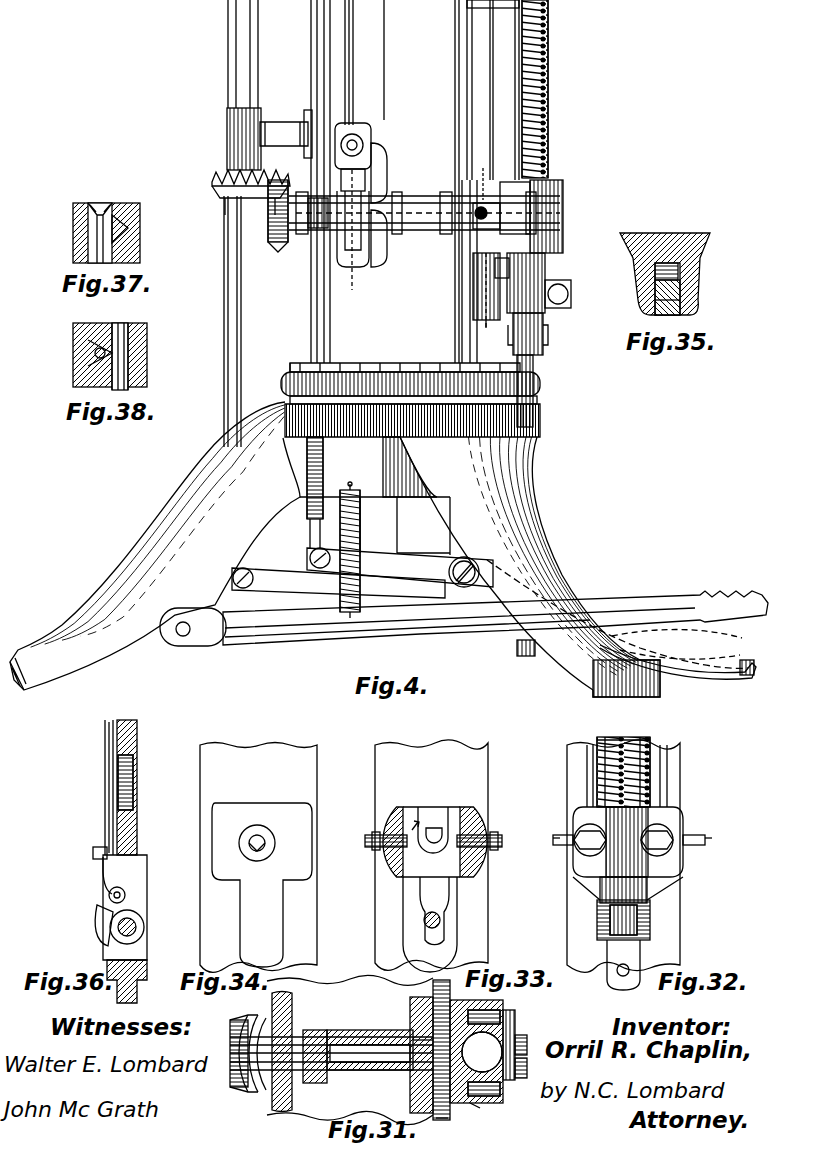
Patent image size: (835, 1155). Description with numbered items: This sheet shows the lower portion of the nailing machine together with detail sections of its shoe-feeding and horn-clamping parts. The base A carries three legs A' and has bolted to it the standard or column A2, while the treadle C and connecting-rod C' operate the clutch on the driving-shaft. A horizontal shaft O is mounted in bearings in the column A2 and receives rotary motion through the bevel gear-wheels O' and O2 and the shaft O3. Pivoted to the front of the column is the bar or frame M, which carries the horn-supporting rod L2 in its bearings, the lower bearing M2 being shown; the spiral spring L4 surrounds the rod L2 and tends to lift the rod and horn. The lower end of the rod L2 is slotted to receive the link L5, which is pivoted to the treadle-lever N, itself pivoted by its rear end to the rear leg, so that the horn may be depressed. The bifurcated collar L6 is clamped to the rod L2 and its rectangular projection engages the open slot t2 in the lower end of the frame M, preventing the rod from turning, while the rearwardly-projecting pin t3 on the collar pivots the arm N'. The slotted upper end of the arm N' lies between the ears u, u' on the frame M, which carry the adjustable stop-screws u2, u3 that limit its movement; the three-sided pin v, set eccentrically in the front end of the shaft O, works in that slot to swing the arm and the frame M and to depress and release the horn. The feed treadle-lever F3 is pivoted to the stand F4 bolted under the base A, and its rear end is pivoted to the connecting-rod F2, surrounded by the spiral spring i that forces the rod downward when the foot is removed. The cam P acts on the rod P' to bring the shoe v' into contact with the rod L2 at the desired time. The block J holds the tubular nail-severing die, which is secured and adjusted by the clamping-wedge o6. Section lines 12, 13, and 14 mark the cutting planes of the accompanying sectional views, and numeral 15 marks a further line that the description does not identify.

In FIG. 4, the shaft O3 is at (245, 52).
In FIG. 4, the connecting-rod C' is at (242, 321).
In FIG. 4, the bevel gear-wheel O2 is at (246, 192).
In FIG. 4, the section line 12 is at (600, 213).
In FIG. 4, the bevel gear-wheel O' is at (293, 233).
In FIG. 31, the bevel gear-wheel O' is at (243, 1046).
In FIG. 4, the connecting-rod F2 is at (320, 318).
In FIG. 4, the rod P' is at (364, 62).
In FIG. 37, the rod P' is at (100, 219).
In FIG. 38, the rod P' is at (83, 362).
In FIG. 36, the rod P' is at (99, 789).
In FIG. 4, the cam P is at (361, 208).
In FIG. 36, the cam P is at (101, 901).
In FIG. 31, the cam P is at (358, 1065).
In FIG. 4, the standard or column A2 is at (421, 181).
In FIG. 36, the standard or column A2 is at (137, 738).
In FIG. 34, the standard or column A2 is at (237, 785).
In FIG. 33, the standard or column A2 is at (402, 770).
In FIG. 31, the standard or column A2 is at (293, 1008).
In FIG. 4, the bar or frame M is at (485, 62).
In FIG. 35, the bar or frame M is at (650, 238).
In FIG. 33, the bar or frame M is at (476, 862).
In FIG. 32, the bar or frame M is at (590, 738).
In FIG. 31, the bar or frame M is at (475, 1000).
In FIG. 4, the section line 13 is at (483, 175).
In FIG. 4, the supporting-rod L2 is at (550, 100).
In FIG. 32, the supporting-rod L2 is at (625, 737).
In FIG. 31, the supporting-rod L2 is at (515, 1030).
In FIG. 4, the bearing M2 is at (546, 216).
In FIG. 31, the bearing M2 is at (490, 1109).
In FIG. 4, the rearwardly-projecting ear u is at (486, 210).
In FIG. 33, the rearwardly-projecting ear u is at (379, 830).
In FIG. 4, the adjustable stop-screw u2 is at (470, 228).
In FIG. 33, the adjustable stop-screw u2 is at (368, 848).
In FIG. 32, the adjustable stop-screw u2 is at (556, 827).
In FIG. 31, the adjustable stop-screw u2 is at (452, 1116).
In FIG. 4, the arm N' is at (470, 291).
In FIG. 33, the arm N' is at (434, 911).
In FIG. 31, the arm N' is at (409, 1055).
In FIG. 4, the pin 15 is at (485, 327).
In FIG. 4, the bifurcated collar L6 is at (547, 270).
In FIG. 32, the bifurcated collar L6 is at (650, 932).
In FIG. 31, the bifurcated collar L6 is at (527, 1040).
In FIG. 4, the link L5 is at (533, 380).
In FIG. 35, the link L5 is at (667, 302).
In FIG. 4, the base A is at (410, 400).
In FIG. 4, the legs A' is at (335, 549).
In FIG. 4, the stand F4 is at (448, 515).
In FIG. 4, the spiral spring i is at (320, 492).
In FIG. 4, the treadle-lever F3 is at (700, 683).
In FIG. 4, the treadle C is at (490, 614).
In FIG. 4, the treadle-lever N is at (464, 624).
In FIG. 37, the block J is at (130, 222).
In FIG. 38, the block J is at (99, 356).
In FIG. 37, the wedge or key o6 is at (128, 236).
In FIG. 38, the wedge or key o6 is at (128, 356).
In FIG. 35, the open slot t2 is at (666, 271).
In FIG. 35, the rearwardly-projecting pin t3 is at (655, 300).
In FIG. 33, the rearwardly-projecting pin t3 is at (424, 920).
In FIG. 36, the horizontal shaft O is at (139, 926).
In FIG. 34, the horizontal shaft O is at (262, 885).
In FIG. 33, the horizontal shaft O is at (433, 819).
In FIG. 31, the horizontal shaft O is at (331, 1040).
In FIG. 34, the three-sided pin v is at (243, 840).
In FIG. 33, the three-sided pin v is at (424, 846).
In FIG. 33, the rearwardly-projecting ear u' is at (486, 825).
In FIG. 33, the adjustable stop-screw u3 is at (502, 840).
In FIG. 32, the adjustable stop-screw u3 is at (717, 839).
In FIG. 31, the adjustable stop-screw u3 is at (450, 987).
In FIG. 32, the spiral spring L4 is at (650, 742).
In FIG. 31, the shoe v' is at (411, 1068).
In FIG. 4, the section line 14 is at (350, 233).